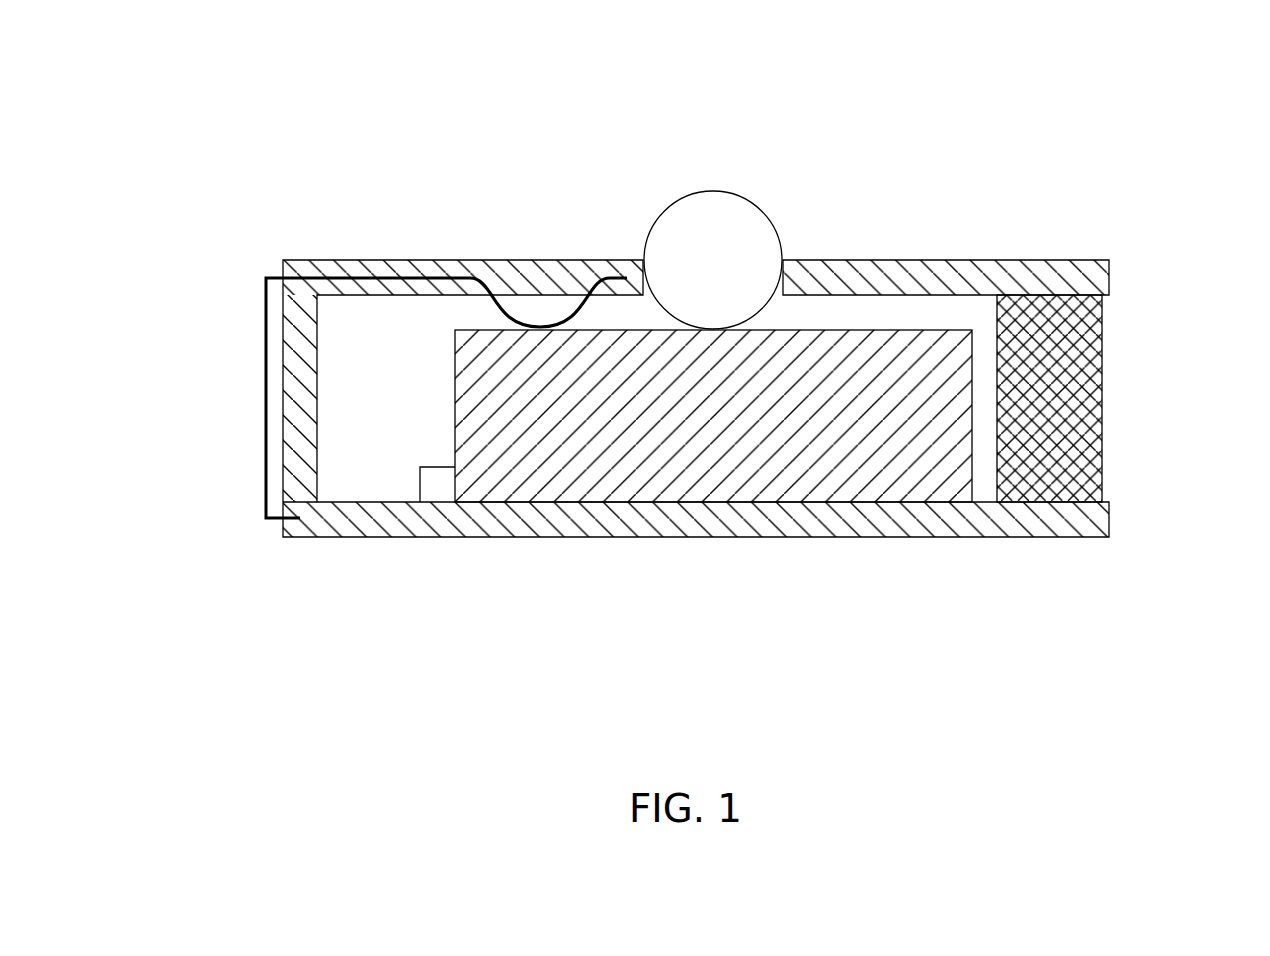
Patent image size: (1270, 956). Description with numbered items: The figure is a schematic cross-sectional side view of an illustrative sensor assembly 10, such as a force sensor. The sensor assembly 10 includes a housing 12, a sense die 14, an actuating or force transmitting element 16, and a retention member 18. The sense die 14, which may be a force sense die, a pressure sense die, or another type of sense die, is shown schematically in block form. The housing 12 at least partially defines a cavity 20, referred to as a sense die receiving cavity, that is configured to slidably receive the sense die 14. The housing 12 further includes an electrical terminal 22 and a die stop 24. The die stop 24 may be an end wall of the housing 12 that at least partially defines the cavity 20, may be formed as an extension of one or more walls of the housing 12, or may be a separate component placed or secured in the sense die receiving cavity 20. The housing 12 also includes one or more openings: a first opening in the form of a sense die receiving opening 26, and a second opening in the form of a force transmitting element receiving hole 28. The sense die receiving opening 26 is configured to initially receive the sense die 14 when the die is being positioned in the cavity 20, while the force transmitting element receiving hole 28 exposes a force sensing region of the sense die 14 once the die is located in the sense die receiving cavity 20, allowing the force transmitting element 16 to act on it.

The sensor assembly 10 is at (1074, 94).
The housing 12 is at (940, 260).
The sense die 14 is at (702, 487).
The force transmitting element 16 is at (748, 193).
The retention member 18 is at (1092, 383).
The cavity 20 is at (360, 483).
The electrical terminal 22 is at (265, 396).
The die stop 24 is at (436, 483).
The sense die receiving opening 26 is at (1138, 490).
The force transmitting element receiving hole 28 is at (797, 304).